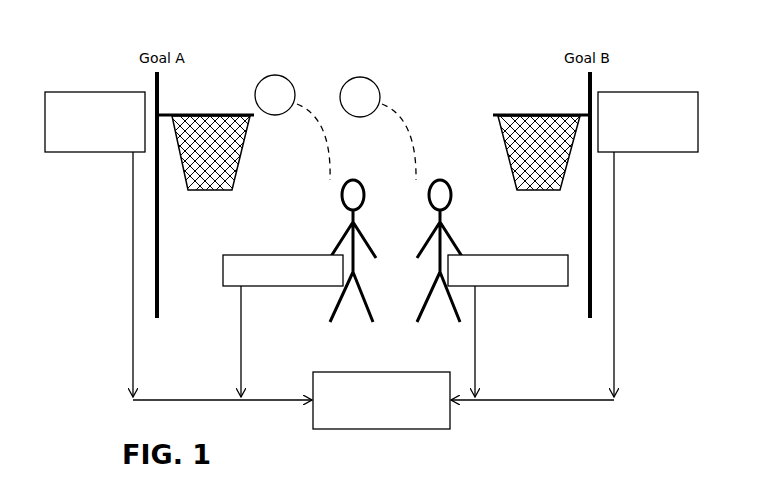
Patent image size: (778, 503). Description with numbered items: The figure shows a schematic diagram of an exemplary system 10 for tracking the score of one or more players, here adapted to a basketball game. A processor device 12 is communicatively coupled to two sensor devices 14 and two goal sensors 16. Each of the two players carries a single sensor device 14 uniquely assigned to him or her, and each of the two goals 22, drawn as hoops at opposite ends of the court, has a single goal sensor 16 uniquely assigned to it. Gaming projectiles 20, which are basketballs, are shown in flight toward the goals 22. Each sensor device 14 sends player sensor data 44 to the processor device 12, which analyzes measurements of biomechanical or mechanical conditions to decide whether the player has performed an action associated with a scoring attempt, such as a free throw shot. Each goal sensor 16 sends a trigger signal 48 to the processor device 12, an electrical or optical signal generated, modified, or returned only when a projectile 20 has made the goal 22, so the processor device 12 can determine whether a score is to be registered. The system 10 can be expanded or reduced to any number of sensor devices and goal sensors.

The system 10 is at (442, 37).
The processor device 12 is at (387, 429).
The sensor device 14 is at (298, 287).
The goal sensor 16 is at (92, 152).
The gaming projectile 20 is at (343, 88).
The goal 22 is at (227, 113).
The player sensor data 44 is at (241, 350).
The trigger signal 48 is at (133, 292).